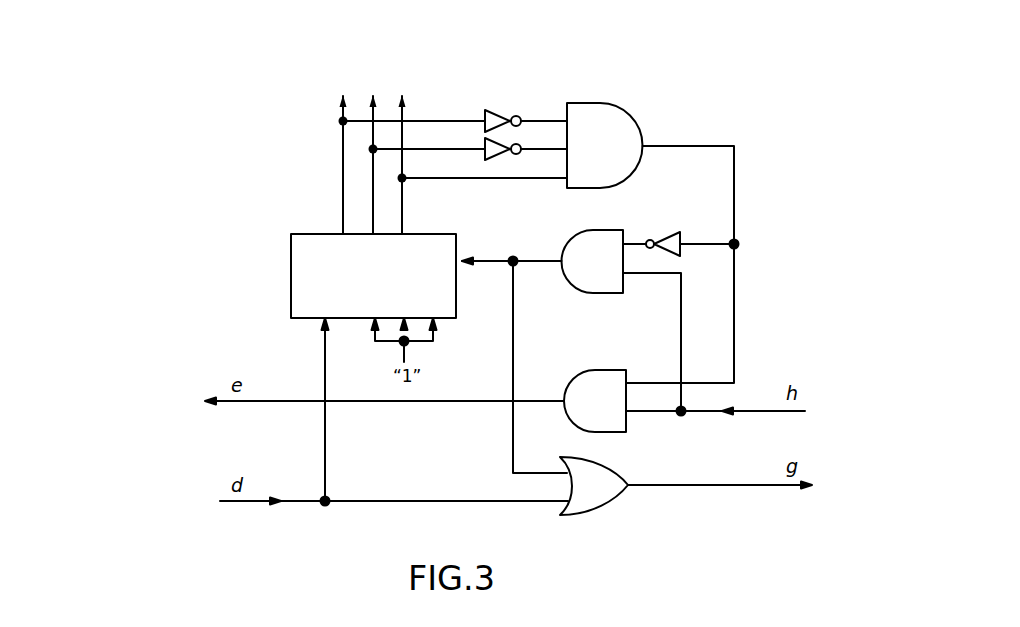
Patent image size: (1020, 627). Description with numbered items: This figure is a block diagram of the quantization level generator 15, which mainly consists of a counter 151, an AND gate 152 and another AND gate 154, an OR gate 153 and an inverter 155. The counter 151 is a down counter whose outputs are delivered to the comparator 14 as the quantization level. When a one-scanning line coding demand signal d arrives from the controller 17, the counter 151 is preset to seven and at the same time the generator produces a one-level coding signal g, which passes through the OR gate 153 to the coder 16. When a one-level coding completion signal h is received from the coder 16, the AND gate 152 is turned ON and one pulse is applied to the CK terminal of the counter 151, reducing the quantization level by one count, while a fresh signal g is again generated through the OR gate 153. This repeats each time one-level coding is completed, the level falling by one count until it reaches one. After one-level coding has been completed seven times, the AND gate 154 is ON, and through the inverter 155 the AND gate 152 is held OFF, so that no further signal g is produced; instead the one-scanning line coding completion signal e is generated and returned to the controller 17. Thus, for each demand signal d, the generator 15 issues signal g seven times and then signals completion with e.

The comparator 14 is at (485, 59).
The quantization level generator 15 is at (184, 206).
The coder 16 is at (930, 420).
The controller 17 is at (128, 441).
The counter 151 is at (312, 234).
The AND gate 152 is at (611, 229).
The OR gate 153 is at (618, 471).
The AND gate 154 is at (620, 110).
The inverter 155 is at (672, 232).